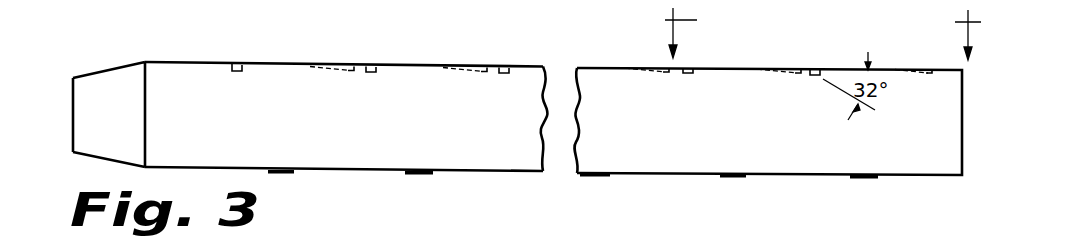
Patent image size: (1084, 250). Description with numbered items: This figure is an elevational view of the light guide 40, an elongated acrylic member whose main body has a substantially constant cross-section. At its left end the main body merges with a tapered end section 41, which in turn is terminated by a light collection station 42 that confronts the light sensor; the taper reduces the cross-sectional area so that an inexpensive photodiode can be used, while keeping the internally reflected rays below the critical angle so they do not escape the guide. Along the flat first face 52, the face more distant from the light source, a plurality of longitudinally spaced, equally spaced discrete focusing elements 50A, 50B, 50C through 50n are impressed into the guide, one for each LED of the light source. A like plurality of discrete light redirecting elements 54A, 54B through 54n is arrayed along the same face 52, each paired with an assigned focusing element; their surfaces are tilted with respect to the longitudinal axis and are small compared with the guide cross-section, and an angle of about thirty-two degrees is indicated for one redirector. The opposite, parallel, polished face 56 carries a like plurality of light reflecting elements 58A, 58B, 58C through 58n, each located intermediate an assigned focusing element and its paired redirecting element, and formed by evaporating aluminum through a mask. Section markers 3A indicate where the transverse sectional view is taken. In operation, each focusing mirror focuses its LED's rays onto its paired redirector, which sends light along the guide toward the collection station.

The light guide 40 is at (962, 155).
The tapered end section 41 is at (112, 70).
The light collection station 42 is at (69, 88).
The focusing element 50n is at (332, 66).
The focusing element 50A is at (915, 70).
The focusing element 50B is at (781, 67).
The focusing element 50C is at (643, 67).
The first side or face 52 is at (527, 66).
The light redirecting element 54n is at (235, 64).
The light redirecting element 54A is at (812, 72).
The light redirecting element 54B is at (687, 68).
The face 56 is at (495, 172).
The light reflecting element 58n is at (290, 174).
The light reflecting element 58A is at (864, 180).
The light reflecting element 58B is at (730, 178).
The light reflecting element 58C is at (597, 177).
The section line 3A- 3A is at (823, 34).